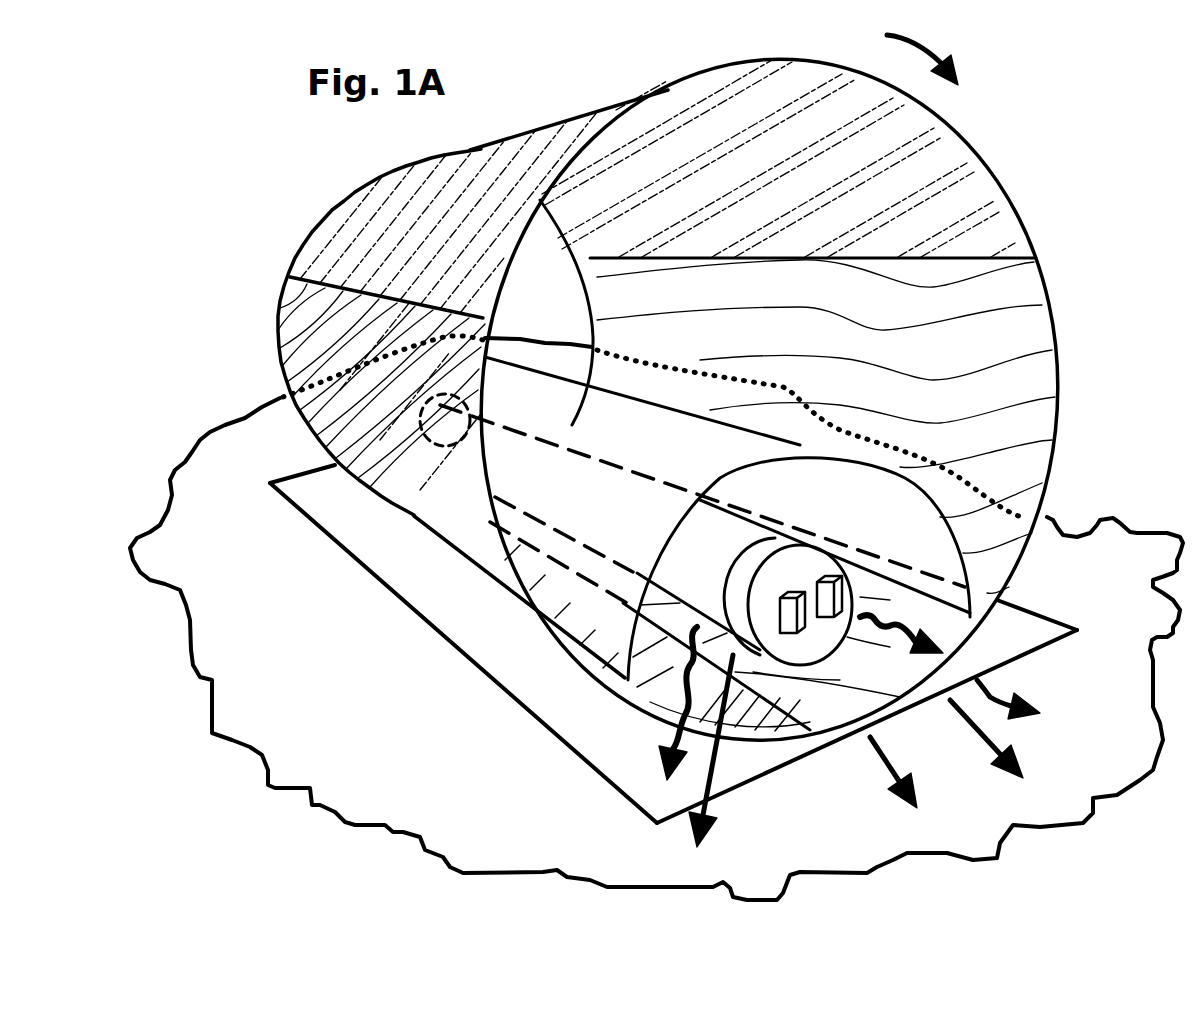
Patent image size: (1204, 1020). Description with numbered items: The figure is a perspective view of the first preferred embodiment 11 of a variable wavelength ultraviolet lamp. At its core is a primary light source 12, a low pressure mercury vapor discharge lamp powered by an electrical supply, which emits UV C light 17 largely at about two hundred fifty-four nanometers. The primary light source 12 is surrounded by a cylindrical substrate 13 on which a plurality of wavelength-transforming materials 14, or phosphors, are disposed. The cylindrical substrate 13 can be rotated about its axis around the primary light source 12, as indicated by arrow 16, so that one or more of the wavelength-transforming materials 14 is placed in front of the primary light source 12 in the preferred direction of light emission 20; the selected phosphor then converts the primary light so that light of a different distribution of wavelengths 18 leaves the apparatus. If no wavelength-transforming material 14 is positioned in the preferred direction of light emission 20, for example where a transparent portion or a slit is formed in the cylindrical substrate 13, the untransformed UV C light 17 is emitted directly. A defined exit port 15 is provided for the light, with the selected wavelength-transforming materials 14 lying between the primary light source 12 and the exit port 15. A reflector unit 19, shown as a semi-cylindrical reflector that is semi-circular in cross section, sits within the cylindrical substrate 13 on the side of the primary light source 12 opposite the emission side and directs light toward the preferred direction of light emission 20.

The first preferred embodiment 11 is at (619, 410).
The primary light source 12 is at (733, 537).
The cylindrical substrate 13 is at (1057, 317).
The wavelength-transforming materials 14 is at (310, 332).
The exit port 15 is at (517, 660).
The arrow 16 is at (905, 49).
The UV C light 17 is at (663, 733).
The light of a different distribution of wavelengths 18 is at (1027, 709).
The reflector unit 19 is at (655, 428).
The preferred direction of light emission 20 is at (880, 751).